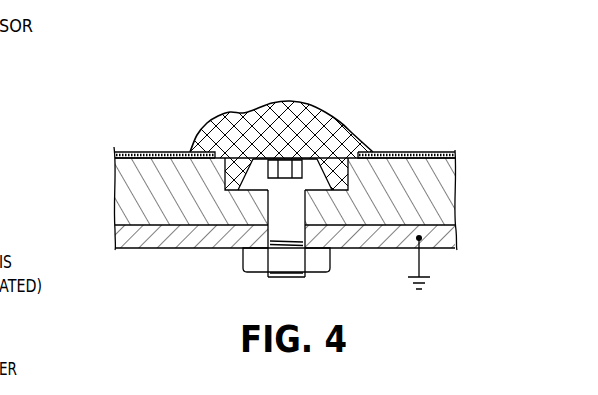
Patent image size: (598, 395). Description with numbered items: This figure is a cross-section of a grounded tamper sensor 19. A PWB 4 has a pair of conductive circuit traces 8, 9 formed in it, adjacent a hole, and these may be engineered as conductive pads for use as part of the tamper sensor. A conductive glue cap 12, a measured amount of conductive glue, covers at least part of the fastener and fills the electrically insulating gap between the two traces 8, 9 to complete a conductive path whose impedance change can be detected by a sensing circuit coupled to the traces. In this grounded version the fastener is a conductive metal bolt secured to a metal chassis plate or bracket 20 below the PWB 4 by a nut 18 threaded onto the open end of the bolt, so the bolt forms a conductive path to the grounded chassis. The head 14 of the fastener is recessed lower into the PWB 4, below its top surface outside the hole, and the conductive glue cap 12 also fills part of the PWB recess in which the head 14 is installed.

The PWB 4 is at (130, 203).
The circuit trace 8 is at (163, 152).
The circuit trace 9 is at (427, 152).
The conductive glue cap 12 is at (325, 111).
The head 14 is at (257, 177).
The nut 18 is at (243, 258).
The grounded tamper sensor 19 is at (352, 101).
The metal chassis plate or bracket 20 is at (456, 245).